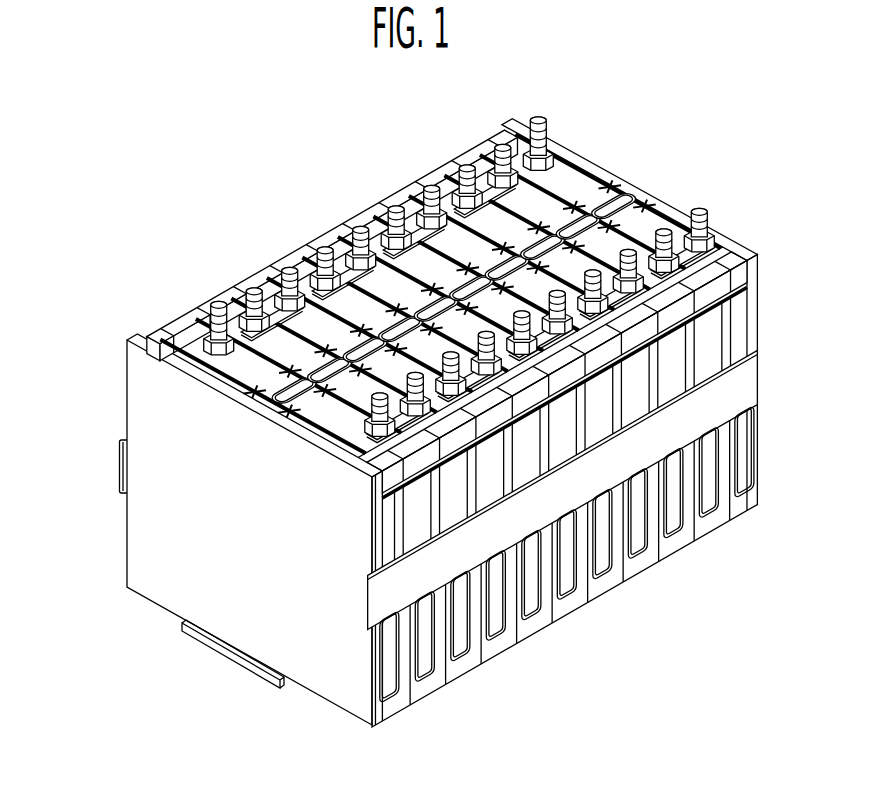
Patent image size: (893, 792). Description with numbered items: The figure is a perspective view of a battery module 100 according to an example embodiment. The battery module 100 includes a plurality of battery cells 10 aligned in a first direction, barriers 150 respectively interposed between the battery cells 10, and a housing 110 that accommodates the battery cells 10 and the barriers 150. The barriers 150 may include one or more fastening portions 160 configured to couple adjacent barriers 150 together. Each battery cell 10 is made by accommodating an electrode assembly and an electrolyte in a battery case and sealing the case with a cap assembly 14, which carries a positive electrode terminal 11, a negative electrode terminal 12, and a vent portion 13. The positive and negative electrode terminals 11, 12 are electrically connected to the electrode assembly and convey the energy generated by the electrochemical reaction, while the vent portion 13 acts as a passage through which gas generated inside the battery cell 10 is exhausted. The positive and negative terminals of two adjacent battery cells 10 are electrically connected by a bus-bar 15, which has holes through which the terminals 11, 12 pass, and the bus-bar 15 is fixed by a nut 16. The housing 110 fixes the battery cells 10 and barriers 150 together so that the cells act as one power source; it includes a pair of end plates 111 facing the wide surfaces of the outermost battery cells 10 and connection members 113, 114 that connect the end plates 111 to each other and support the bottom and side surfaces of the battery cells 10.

The battery module 100 is at (328, 148).
The battery cell 10 is at (745, 452).
The positive electrode terminal 11 is at (507, 148).
The negative electrode terminal 12 is at (702, 222).
The vent portion 13 is at (617, 208).
The cap assembly 14 is at (563, 180).
The bus-bar 15 is at (404, 212).
The nut 16 is at (313, 266).
The housing 110 is at (194, 529).
The end plate 111 is at (152, 540).
The connection member 113 is at (387, 593).
The connection member 114 is at (162, 654).
The barrier 150 is at (655, 556).
The fastening portion 160 is at (742, 258).